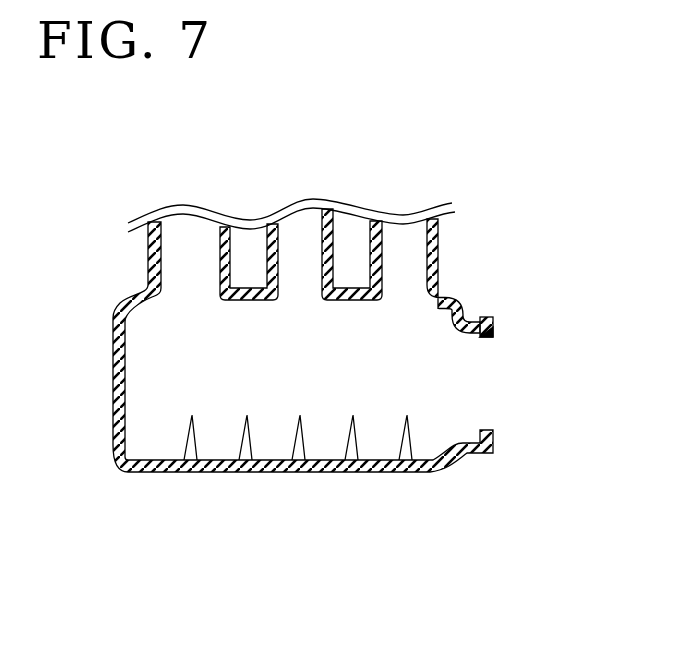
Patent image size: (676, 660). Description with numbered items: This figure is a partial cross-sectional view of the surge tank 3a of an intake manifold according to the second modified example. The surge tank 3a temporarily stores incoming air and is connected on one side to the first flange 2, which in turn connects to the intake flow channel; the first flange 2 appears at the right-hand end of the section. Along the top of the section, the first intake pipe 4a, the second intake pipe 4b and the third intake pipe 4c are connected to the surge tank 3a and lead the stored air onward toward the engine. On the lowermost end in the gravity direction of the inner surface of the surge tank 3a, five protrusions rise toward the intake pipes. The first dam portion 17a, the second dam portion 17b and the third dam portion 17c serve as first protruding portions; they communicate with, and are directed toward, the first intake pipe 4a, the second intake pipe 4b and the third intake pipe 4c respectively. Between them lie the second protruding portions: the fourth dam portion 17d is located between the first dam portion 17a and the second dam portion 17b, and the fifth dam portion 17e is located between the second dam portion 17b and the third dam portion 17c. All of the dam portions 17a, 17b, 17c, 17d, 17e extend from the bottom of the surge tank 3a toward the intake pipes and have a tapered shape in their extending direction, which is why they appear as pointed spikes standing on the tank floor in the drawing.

The first flange 2 is at (494, 323).
The surge tank 3a is at (114, 461).
The first intake pipe 4a is at (413, 247).
The second intake pipe 4b is at (305, 247).
The third intake pipe 4c is at (190, 240).
The first dam portion 17a is at (404, 453).
The second dam portion 17b is at (300, 453).
The third dam portion 17c is at (190, 453).
The fourth dam portion 17d is at (351, 453).
The fifth dam portion 17e is at (247, 453).